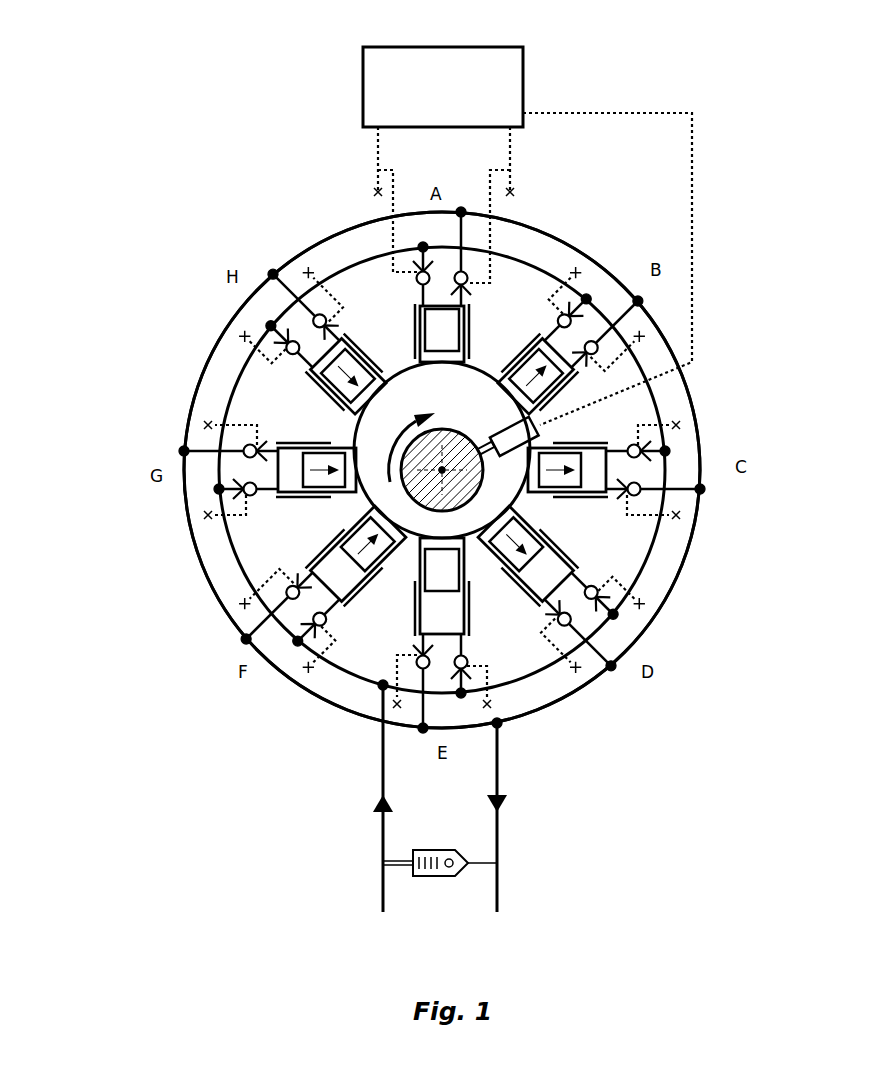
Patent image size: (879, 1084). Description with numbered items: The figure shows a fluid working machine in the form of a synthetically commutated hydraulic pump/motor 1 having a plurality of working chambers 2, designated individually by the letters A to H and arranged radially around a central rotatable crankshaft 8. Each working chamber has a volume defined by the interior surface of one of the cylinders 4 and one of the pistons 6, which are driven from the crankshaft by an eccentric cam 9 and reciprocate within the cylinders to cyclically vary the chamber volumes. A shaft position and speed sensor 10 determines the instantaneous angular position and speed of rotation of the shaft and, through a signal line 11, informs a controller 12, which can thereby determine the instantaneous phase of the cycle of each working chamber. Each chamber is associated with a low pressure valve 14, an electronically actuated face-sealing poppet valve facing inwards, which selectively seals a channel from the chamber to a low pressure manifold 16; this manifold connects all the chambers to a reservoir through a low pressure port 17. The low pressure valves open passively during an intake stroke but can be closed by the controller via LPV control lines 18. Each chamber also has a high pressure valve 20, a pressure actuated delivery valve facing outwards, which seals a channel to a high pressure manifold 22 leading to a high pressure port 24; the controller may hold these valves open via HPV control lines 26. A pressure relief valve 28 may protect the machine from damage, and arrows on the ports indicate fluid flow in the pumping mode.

The synthetically commutated hydraulic pump/motor 1 is at (125, 62).
The working chambers 2 is at (287, 462).
The cylinders 4 is at (287, 440).
The pistons 6 is at (330, 470).
The rotatable crankshaft 8 is at (452, 497).
The eccentric cam 9 is at (505, 497).
The shaft position and speed sensor 10 is at (520, 428).
The signal line 11 is at (697, 308).
The controller 12 is at (449, 99).
The low pressure valves 14 is at (293, 347).
The low pressure manifold 16 is at (237, 375).
The low pressure port 17 is at (383, 768).
The LPV control lines 18 is at (378, 168).
The high pressure valves 20 is at (322, 318).
The high pressure manifold 22 is at (185, 452).
The high pressure port 24 is at (498, 808).
The HPV control lines 26 is at (513, 160).
The pressure relief valve 28 is at (383, 866).